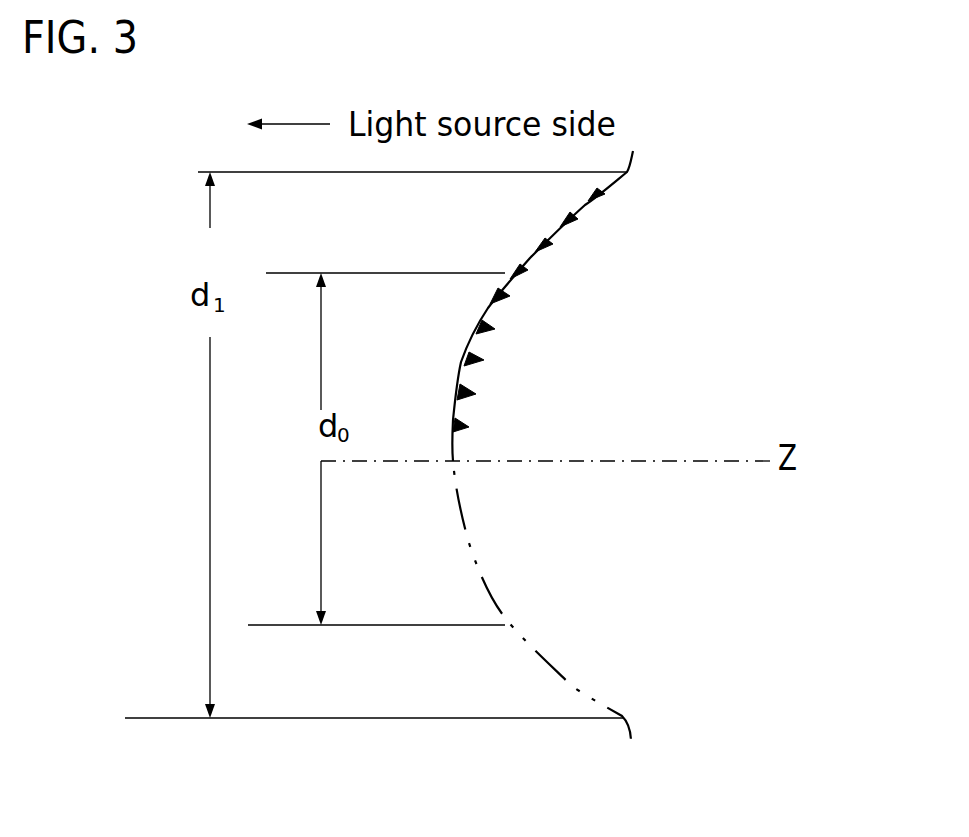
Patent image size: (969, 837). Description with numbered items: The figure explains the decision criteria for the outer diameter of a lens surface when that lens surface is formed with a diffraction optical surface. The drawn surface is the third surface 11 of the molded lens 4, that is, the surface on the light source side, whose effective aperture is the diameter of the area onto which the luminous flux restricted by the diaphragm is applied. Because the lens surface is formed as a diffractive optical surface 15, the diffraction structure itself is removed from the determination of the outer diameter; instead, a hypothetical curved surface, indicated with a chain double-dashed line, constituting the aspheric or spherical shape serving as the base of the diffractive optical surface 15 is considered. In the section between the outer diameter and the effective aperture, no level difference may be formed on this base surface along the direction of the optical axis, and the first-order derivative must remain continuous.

The diffractive optical surface 15 is at (468, 353).
The third surface 11 is at (520, 632).
The molded lens 4 is at (533, 748).